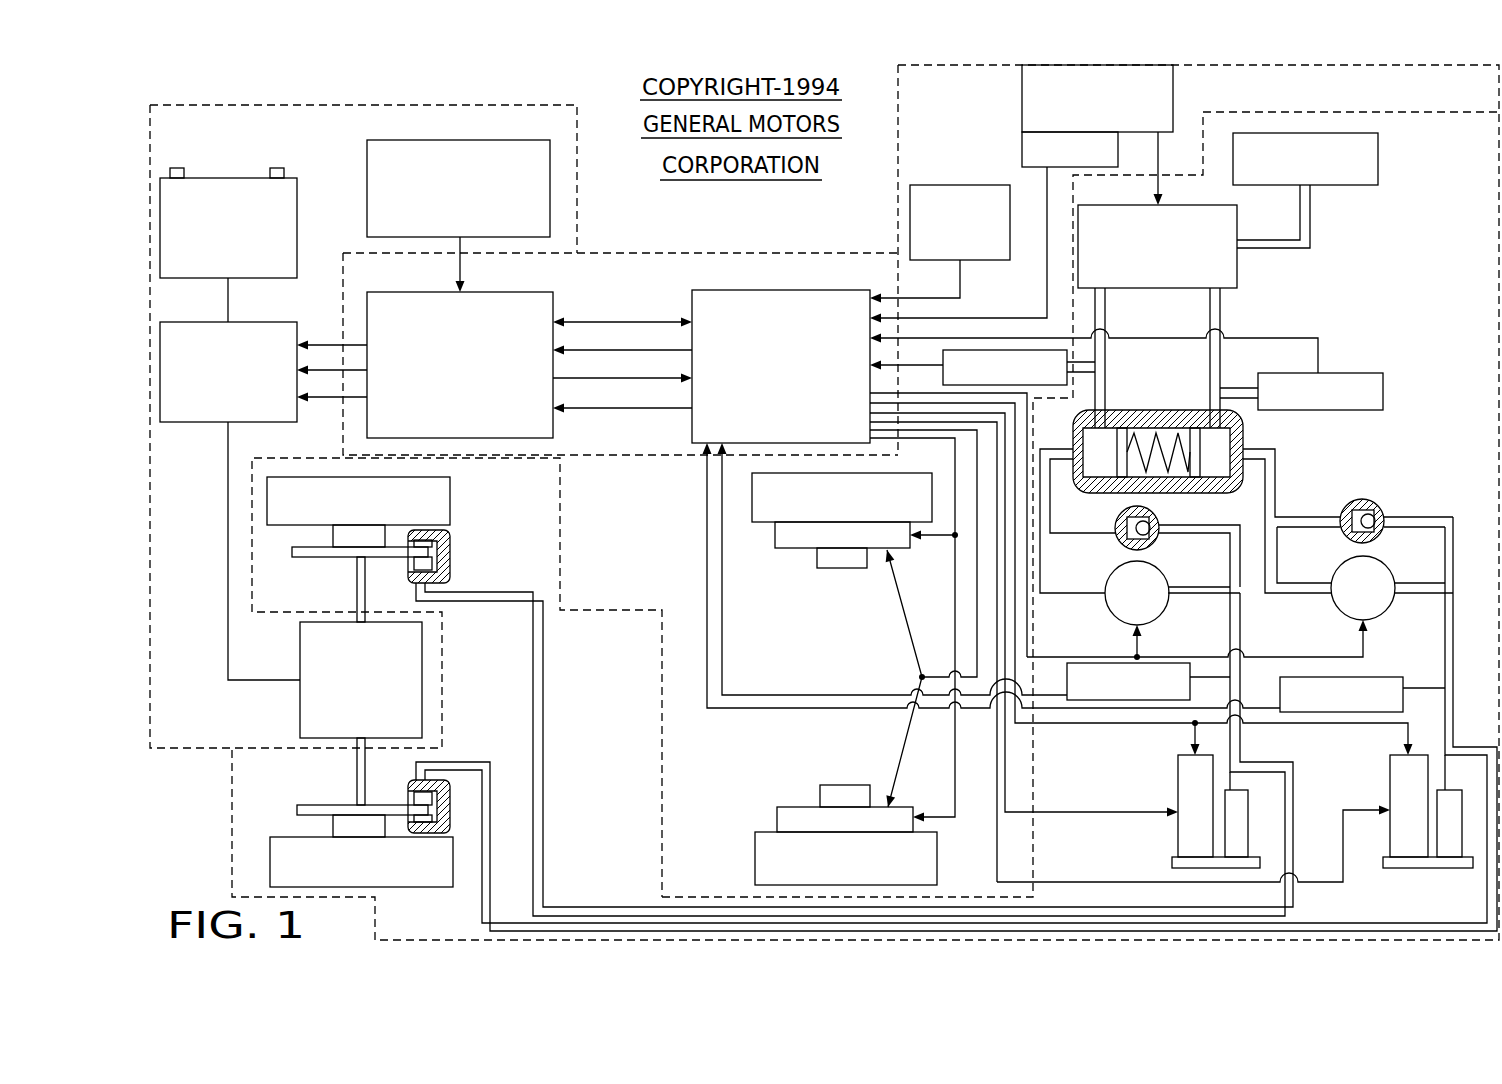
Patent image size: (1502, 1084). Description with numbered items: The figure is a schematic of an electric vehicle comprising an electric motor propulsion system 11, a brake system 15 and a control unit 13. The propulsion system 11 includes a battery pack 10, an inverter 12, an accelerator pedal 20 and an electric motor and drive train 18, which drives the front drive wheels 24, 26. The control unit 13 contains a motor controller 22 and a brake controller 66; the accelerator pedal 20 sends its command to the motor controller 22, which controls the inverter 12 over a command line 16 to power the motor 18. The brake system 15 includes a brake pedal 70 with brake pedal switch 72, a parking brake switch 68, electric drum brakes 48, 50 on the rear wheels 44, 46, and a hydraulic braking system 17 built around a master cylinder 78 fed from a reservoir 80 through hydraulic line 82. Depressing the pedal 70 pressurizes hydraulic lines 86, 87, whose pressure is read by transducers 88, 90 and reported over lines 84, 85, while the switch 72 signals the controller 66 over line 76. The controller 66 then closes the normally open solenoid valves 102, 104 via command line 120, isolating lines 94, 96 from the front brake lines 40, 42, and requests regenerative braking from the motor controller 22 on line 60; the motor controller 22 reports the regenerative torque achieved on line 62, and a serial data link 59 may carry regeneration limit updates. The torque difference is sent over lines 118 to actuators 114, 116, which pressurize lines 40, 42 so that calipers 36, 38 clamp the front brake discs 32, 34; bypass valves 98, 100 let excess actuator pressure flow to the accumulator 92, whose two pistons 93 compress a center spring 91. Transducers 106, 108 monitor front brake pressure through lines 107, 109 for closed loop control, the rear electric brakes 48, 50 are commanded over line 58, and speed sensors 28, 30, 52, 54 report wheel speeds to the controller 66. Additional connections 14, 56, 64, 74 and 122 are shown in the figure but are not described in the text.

The battery pack 10 is at (218, 188).
The electric motor propulsion system 11 is at (577, 140).
The inverter 12 is at (200, 405).
The control unit 13 is at (748, 253).
The inverter to motor power line 14 is at (228, 597).
The brake system 15 is at (898, 147).
The command line 16 is at (328, 326).
The hydraulic braking system 17 is at (1330, 103).
The electric motor and drive train 18 is at (313, 697).
The accelerator pedal 20 is at (375, 152).
The motor controller 22 is at (503, 303).
The drive wheel 24 is at (430, 493).
The drive wheel 26 is at (397, 877).
The speed sensor 28 is at (340, 533).
The speed sensor 30 is at (340, 825).
The brake disc 32 is at (343, 557).
The brake disc 34 is at (323, 812).
The brake caliper 36 is at (433, 548).
The brake caliper 38 is at (447, 807).
The hydraulic line 40 is at (540, 700).
The hydraulic line 42 is at (465, 763).
The vehicle wheel 44 is at (767, 492).
The vehicle wheel 46 is at (767, 858).
The electric drum brake 48 is at (802, 535).
The electric drum brake 50 is at (805, 820).
The speed sensor 52 is at (843, 565).
The speed sensor 54 is at (850, 788).
The wheel speed sensor signal line 56 is at (945, 677).
The line 58 is at (998, 790).
The serial data link 59 is at (635, 320).
The line 60 is at (667, 347).
The line 62 is at (632, 410).
The controller communication line 64 is at (618, 380).
The brake controller 66 is at (735, 302).
The parking brake switch 68 is at (1045, 116).
The brake pedal 70 is at (1030, 117).
The brake pedal switch 72 is at (1022, 150).
The park brake switch 74 is at (920, 297).
The line 76 is at (1010, 318).
The master cylinder 78 is at (1237, 265).
The reservoir 80 is at (1370, 175).
The hydraulic line 82 is at (1307, 223).
The line 84 is at (915, 366).
The line 85 is at (977, 338).
The hydraulic line 86 is at (1105, 302).
The hydraulic line 87 is at (1220, 305).
The pressure transducer 88 is at (1062, 390).
The pressure transducer 90 is at (1383, 382).
The center spring 91 is at (1137, 453).
The accumulator 92 is at (1190, 413).
The piston 93 is at (1120, 463).
The hydraulic line 94 is at (1047, 573).
The hydraulic line 96 is at (1272, 467).
The bypass valve 98 is at (1120, 543).
The bypass valve 100 is at (1362, 500).
The solenoid valve 102 is at (1147, 567).
The solenoid valve 104 is at (1390, 567).
The pressure transducer 106 is at (1095, 702).
The line 107 is at (725, 647).
The pressure transducer 108 is at (1348, 712).
The line 109 is at (705, 610).
The actuator 114 is at (1202, 868).
The actuator 116 is at (1418, 868).
The line 118 is at (1025, 884).
The command line 120 is at (1330, 655).
The wheel cylinder control line 122 is at (1128, 727).